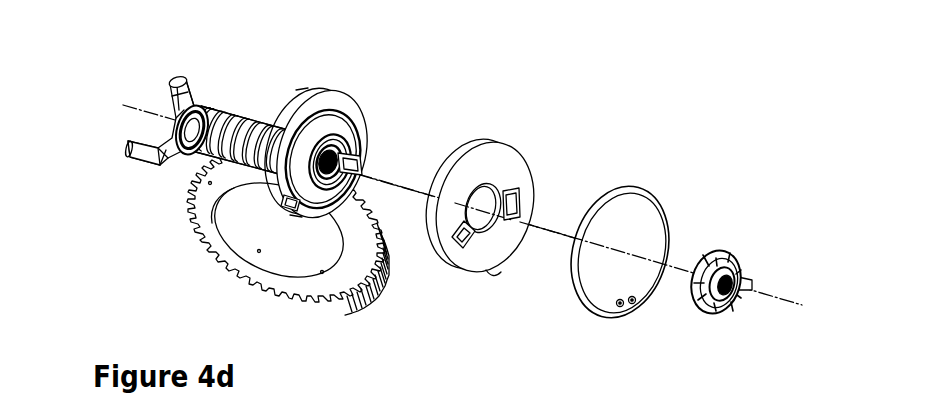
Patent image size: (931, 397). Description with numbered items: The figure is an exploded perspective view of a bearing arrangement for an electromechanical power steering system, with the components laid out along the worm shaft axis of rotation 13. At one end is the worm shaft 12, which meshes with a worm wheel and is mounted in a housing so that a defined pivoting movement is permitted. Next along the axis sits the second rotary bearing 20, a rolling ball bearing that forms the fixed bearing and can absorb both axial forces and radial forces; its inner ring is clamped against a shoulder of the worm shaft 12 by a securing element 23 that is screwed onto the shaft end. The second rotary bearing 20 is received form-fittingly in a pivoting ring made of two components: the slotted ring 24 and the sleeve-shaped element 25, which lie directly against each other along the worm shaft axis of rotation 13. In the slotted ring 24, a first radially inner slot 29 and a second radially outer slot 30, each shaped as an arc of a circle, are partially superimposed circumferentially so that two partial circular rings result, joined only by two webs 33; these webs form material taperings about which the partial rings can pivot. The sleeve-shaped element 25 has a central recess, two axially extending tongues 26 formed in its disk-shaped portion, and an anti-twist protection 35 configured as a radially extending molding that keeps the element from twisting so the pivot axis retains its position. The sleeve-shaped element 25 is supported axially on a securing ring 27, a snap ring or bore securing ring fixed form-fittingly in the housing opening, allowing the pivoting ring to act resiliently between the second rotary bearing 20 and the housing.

The worm shaft 12 is at (225, 117).
The worm shaft axis of rotation 13 is at (137, 107).
The second rotary bearing 20 is at (330, 147).
The securing element 23 is at (707, 250).
The slotted ring 24 is at (313, 110).
The sleeve-shaped element 25 is at (478, 158).
The tongues 26 is at (520, 200).
The securing ring 27 is at (627, 193).
The first radially inner slot 29 is at (295, 130).
The second radially outer slot 30 is at (302, 223).
The webs 33 is at (358, 172).
The anti-twist protection 35 is at (493, 273).